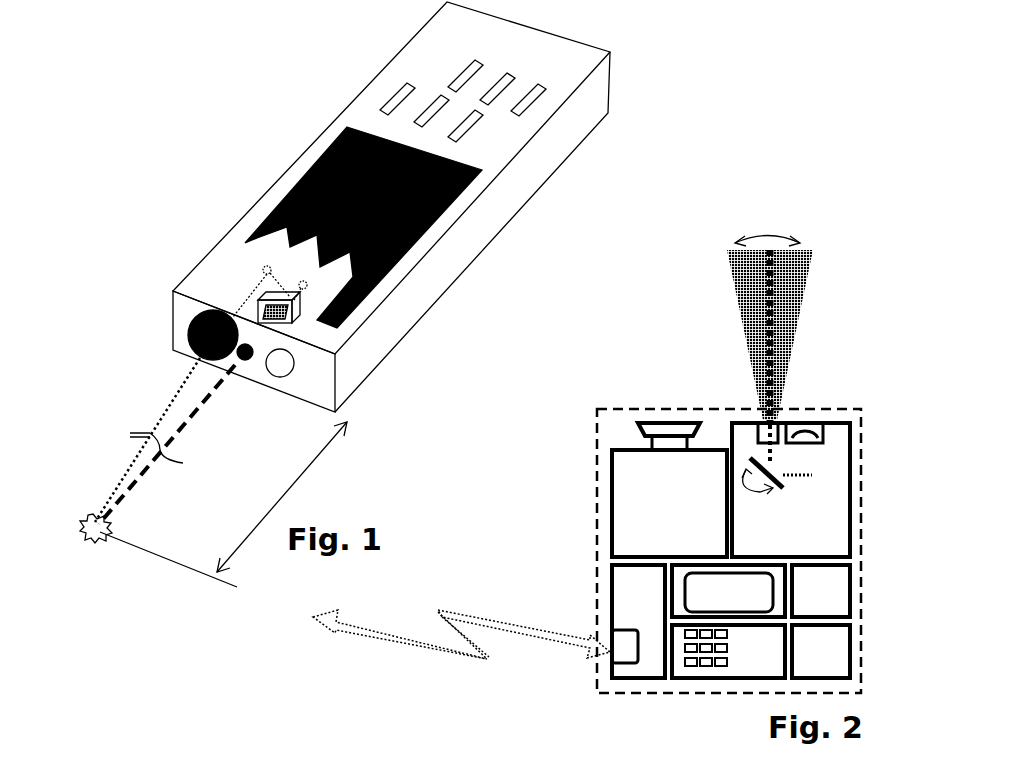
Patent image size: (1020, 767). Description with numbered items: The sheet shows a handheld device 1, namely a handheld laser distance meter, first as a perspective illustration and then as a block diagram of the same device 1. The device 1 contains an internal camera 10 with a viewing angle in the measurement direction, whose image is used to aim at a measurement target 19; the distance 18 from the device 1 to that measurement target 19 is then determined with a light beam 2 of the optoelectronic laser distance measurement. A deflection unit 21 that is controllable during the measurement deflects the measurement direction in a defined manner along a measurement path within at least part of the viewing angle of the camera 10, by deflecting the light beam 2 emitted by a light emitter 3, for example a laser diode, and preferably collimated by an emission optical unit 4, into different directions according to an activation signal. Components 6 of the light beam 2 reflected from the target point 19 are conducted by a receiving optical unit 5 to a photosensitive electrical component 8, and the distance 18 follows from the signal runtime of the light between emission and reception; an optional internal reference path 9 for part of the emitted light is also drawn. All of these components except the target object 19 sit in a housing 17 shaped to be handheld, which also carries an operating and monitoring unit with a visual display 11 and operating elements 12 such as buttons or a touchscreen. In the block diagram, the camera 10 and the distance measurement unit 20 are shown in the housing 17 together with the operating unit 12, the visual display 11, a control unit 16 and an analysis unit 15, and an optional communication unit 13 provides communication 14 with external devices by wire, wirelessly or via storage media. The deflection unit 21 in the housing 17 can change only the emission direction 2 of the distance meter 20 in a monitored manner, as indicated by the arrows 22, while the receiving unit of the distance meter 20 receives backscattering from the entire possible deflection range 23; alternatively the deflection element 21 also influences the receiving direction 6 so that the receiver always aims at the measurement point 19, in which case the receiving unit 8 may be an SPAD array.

In FIG. 1, the handheld device 1 is at (210, 58).
In FIG. 2, the handheld device 1 is at (652, 365).
In FIG. 1, the light beam 2 is at (189, 444).
In FIG. 2, the light beam 2 is at (812, 356).
In FIG. 1, the light emitter 3 is at (396, 316).
In FIG. 1, the emission optical unit 4 is at (273, 394).
In FIG. 1, the receiving optical unit 5 is at (167, 309).
In FIG. 1, the reflected light components 6 is at (142, 415).
In FIG. 1, the photosensitive electrical component 8 is at (238, 244).
In FIG. 1, the internal reference path 9 is at (243, 232).
In FIG. 1, the camera 10 is at (368, 364).
In FIG. 2, the camera 10 is at (632, 490).
In FIG. 1, the visual display 11 is at (348, 213).
In FIG. 2, the visual display 11 is at (660, 563).
In FIG. 1, the operating elements 12 is at (434, 83).
In FIG. 2, the operating elements 12 is at (680, 680).
In FIG. 2, the communication unit 13 is at (602, 621).
In FIG. 2, the communication 14 is at (461, 652).
In FIG. 2, the analysis unit 15 is at (854, 647).
In FIG. 2, the control unit 16 is at (854, 591).
In FIG. 1, the housing 17 is at (391, 207).
In FIG. 2, the housing 17 is at (700, 536).
In FIG. 1, the distance 18 is at (254, 504).
In FIG. 1, the measurement target 19 is at (128, 564).
In FIG. 2, the distance measurement unit 20 is at (823, 490).
In FIG. 1, the deflection unit 21 is at (214, 271).
In FIG. 2, the deflection unit 21 is at (832, 492).
In FIG. 2, the arrows 22 is at (794, 227).
In FIG. 2, the deflection range 23 is at (795, 335).